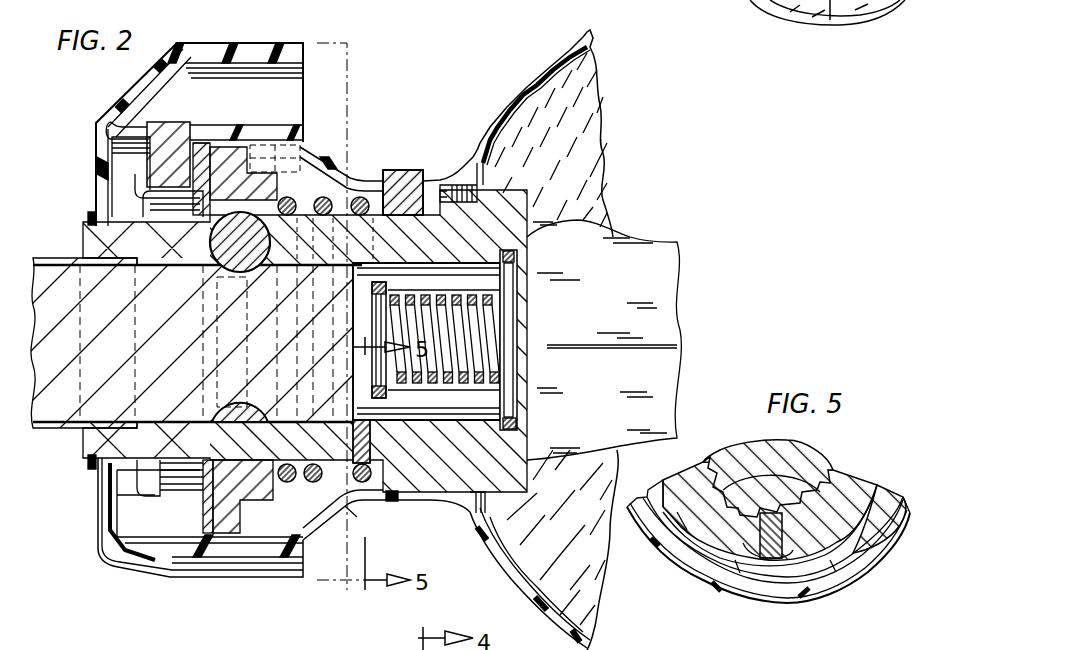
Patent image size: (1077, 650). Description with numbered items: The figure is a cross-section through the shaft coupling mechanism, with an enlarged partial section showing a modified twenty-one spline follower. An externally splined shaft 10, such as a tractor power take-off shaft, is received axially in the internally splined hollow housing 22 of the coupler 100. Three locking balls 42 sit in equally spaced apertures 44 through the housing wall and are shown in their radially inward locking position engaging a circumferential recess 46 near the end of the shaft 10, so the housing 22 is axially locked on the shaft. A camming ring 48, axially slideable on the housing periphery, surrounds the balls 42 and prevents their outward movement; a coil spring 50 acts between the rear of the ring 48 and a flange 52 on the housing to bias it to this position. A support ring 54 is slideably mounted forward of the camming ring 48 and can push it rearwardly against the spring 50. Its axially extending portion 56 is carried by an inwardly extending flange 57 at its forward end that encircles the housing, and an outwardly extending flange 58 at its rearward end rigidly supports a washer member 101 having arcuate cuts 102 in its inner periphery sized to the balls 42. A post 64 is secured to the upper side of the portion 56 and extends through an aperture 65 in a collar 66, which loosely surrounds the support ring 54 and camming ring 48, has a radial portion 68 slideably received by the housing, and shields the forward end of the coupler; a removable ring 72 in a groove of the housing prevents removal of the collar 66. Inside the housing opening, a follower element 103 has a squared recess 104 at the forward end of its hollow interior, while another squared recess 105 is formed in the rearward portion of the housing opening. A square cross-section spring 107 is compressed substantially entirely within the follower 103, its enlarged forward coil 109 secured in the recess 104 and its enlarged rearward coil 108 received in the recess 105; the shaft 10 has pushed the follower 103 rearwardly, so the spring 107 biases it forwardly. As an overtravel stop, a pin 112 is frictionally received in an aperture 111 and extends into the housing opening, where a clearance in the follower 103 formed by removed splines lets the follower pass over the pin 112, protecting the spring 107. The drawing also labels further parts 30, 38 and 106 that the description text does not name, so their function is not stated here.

In FIG. 2, the externally splined shaft 10 is at (53, 415).
In FIG. 2, the hollow housing 22 is at (96, 460).
In FIG. 5, the hollow housing 22 is at (853, 477).
In FIG. 2, the wheel flange 30 is at (507, 93).
In FIG. 5, the wheel flange 30 is at (687, 573).
In FIG. 2, the seal block 38 is at (393, 172).
In FIG. 2, the locking balls 42 is at (243, 205).
In FIG. 2, the apertures 44 is at (212, 268).
In FIG. 2, the circumferential recess 46 is at (237, 276).
In FIG. 2, the camming ring 48 is at (218, 150).
In FIG. 2, the coil spring 50 is at (295, 200).
In FIG. 5, the coil spring 50 is at (883, 497).
In FIG. 2, the flange 52 is at (366, 197).
In FIG. 2, the support ring 54 is at (170, 488).
In FIG. 2, the axially extending portion 56 is at (156, 201).
In FIG. 2, the inwardly extending flange 57 is at (137, 191).
In FIG. 2, the outwardly extending flange 58 is at (196, 145).
In FIG. 2, the post 64 is at (157, 127).
In FIG. 2, the aperture 65 is at (141, 120).
In FIG. 2, the collar 66 is at (196, 46).
In FIG. 2, the radial portion 68 is at (96, 183).
In FIG. 2, the removable ring 72 is at (87, 215).
In FIG. 2, the internally splined coupler 100 is at (390, 55).
In FIG. 2, the washer member 101 is at (210, 140).
In FIG. 2, the arcuate shaped cuts 102 is at (153, 265).
In FIG. 2, the follower element 103 is at (527, 442).
In FIG. 5, the follower element 103 is at (760, 447).
In FIG. 2, the squared recess 104 is at (400, 455).
In FIG. 2, the squared recess 105 is at (527, 443).
In FIG. 5, the gear surface 106 is at (773, 490).
In FIG. 2, the spring 107 is at (487, 333).
In FIG. 2, the enlarged rearward coil 108 is at (593, 217).
In FIG. 2, the enlarged forward coil 109 is at (407, 437).
In FIG. 2, the apertures 111 is at (357, 517).
In FIG. 5, the apertures 111 is at (760, 543).
In FIG. 2, the pin 112 is at (375, 440).
In FIG. 5, the pin 112 is at (775, 547).